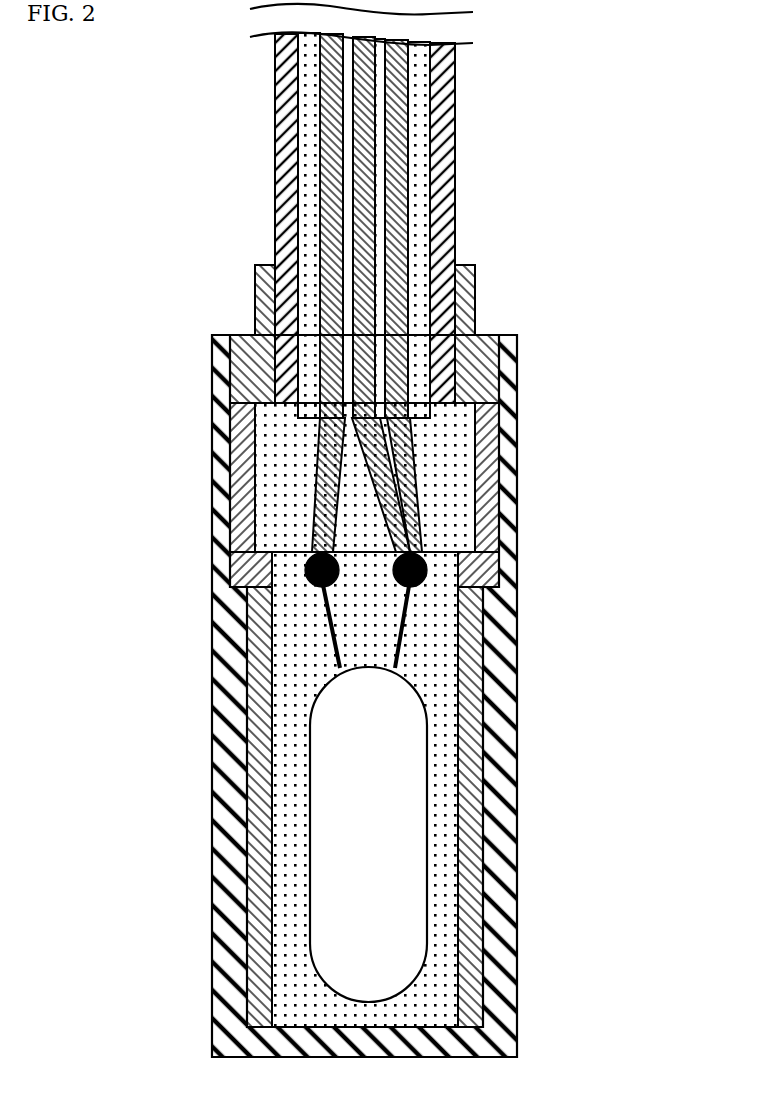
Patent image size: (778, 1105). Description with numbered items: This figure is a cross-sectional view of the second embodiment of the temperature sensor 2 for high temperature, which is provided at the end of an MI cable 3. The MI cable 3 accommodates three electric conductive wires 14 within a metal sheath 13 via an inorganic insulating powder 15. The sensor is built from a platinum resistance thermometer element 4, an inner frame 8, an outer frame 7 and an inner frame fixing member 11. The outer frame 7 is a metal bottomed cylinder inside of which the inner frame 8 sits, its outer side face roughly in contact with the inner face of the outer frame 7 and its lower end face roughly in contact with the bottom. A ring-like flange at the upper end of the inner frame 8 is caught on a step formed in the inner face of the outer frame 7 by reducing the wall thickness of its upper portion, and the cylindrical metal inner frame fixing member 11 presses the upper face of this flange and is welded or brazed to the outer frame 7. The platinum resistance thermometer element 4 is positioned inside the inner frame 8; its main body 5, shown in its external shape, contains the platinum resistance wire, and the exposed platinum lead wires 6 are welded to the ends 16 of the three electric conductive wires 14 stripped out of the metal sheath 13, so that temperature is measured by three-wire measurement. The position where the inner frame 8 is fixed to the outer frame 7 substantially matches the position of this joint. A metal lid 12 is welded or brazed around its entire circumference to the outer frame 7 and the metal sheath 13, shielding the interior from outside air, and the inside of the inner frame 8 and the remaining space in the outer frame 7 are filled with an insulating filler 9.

The temperature sensor for high temperature 2 is at (440, 545).
The MI cable 3 is at (482, 292).
The platinum resistance thermometer element 4 is at (502, 791).
The platinum resistance thermometer element main body 5 is at (395, 808).
The platinum lead wires 6 is at (330, 617).
The outer frame 7 is at (483, 863).
The inner frame 8 is at (247, 823).
The insulating filler 9 is at (437, 942).
The inner frame fixing member 11 is at (230, 423).
The lid 12 is at (255, 315).
The metal sheath 13 is at (455, 110).
The electric conductive wires 14 is at (397, 138).
The inorganic insulating powder 15 is at (420, 256).
The ends of electric conductive wires 16 is at (305, 570).